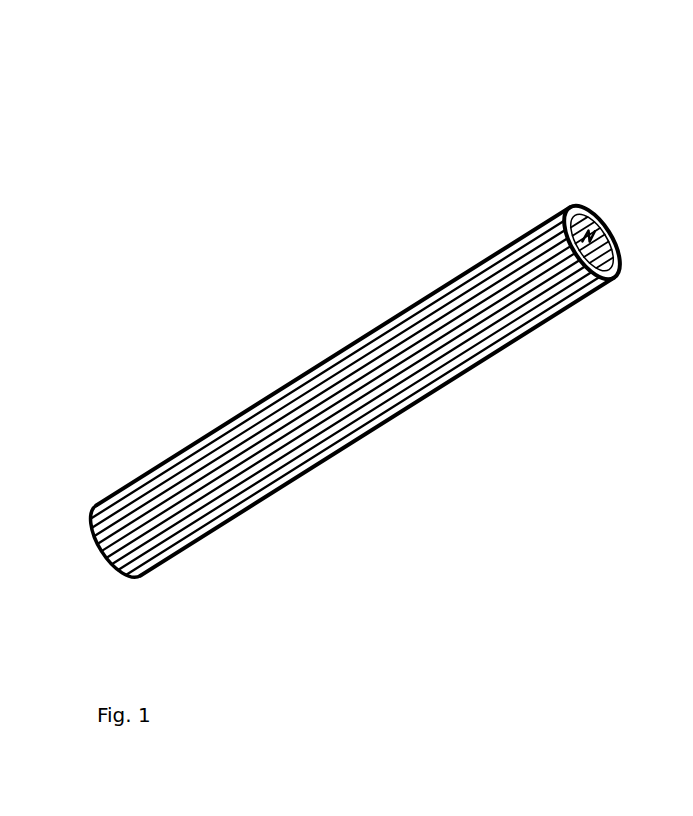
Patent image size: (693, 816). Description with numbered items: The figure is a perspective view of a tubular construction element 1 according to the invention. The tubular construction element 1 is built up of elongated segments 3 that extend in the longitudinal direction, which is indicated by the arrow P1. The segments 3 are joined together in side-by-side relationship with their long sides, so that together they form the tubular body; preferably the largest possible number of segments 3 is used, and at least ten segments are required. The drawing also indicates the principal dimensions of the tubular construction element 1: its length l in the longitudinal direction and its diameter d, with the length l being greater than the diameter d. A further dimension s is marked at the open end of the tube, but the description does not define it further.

The tubular construction element 1 is at (347, 330).
The segments 3 is at (495, 307).
The wall thickness s is at (605, 209).
The diameter d is at (628, 172).
The arrow indicating longitudinal direction P1 is at (374, 292).
The length l is at (152, 635).